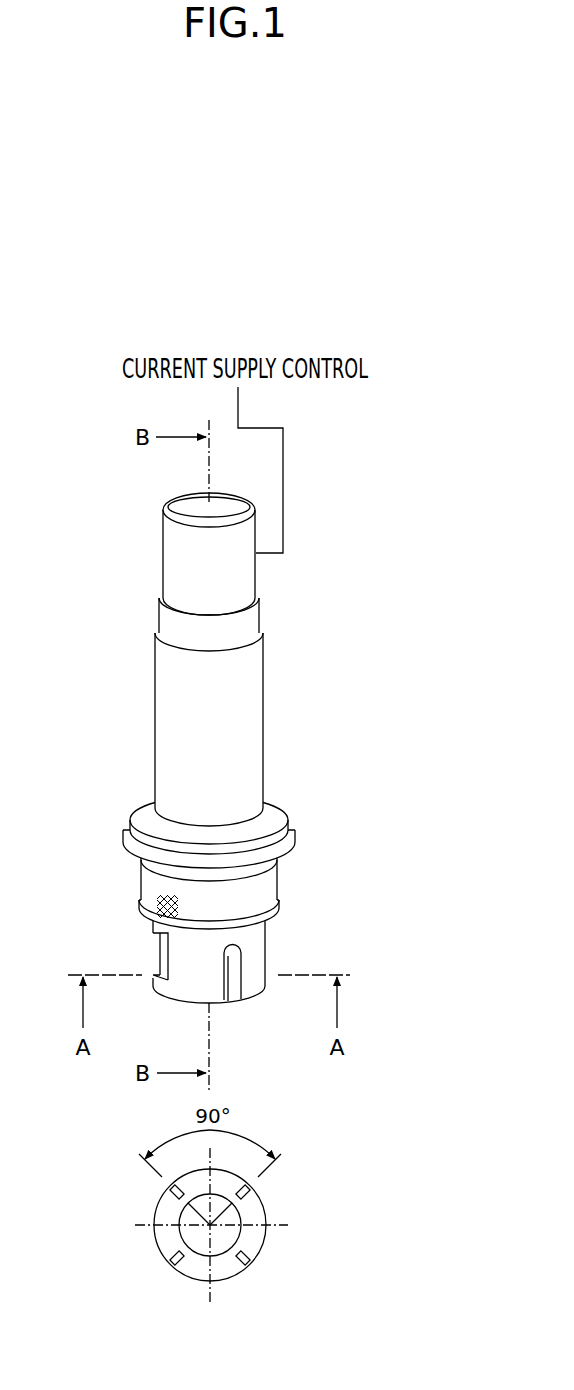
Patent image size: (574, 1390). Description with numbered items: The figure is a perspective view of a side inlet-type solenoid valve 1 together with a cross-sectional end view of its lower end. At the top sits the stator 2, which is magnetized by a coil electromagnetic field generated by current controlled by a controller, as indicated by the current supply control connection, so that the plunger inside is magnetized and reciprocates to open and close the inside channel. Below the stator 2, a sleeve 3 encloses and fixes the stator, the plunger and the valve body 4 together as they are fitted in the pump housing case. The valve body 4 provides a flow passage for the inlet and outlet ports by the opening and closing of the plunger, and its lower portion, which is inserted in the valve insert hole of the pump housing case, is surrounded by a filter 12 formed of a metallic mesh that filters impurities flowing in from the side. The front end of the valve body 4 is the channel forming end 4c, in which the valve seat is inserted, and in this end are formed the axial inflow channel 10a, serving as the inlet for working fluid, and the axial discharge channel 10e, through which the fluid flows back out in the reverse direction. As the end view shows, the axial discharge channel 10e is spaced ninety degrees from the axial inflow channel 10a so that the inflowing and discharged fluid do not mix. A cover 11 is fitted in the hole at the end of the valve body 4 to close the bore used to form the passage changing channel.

The solenoid valve 1 is at (216, 851).
The stator 2 is at (173, 563).
The sleeve 3 is at (248, 733).
The valve body 4 is at (140, 833).
The filter 12 is at (148, 888).
The axial inflow channel 10a is at (153, 947).
The axial discharge channel 10e is at (233, 982).
The channel forming end 4c is at (165, 1235).
The cover 11 is at (213, 1247).